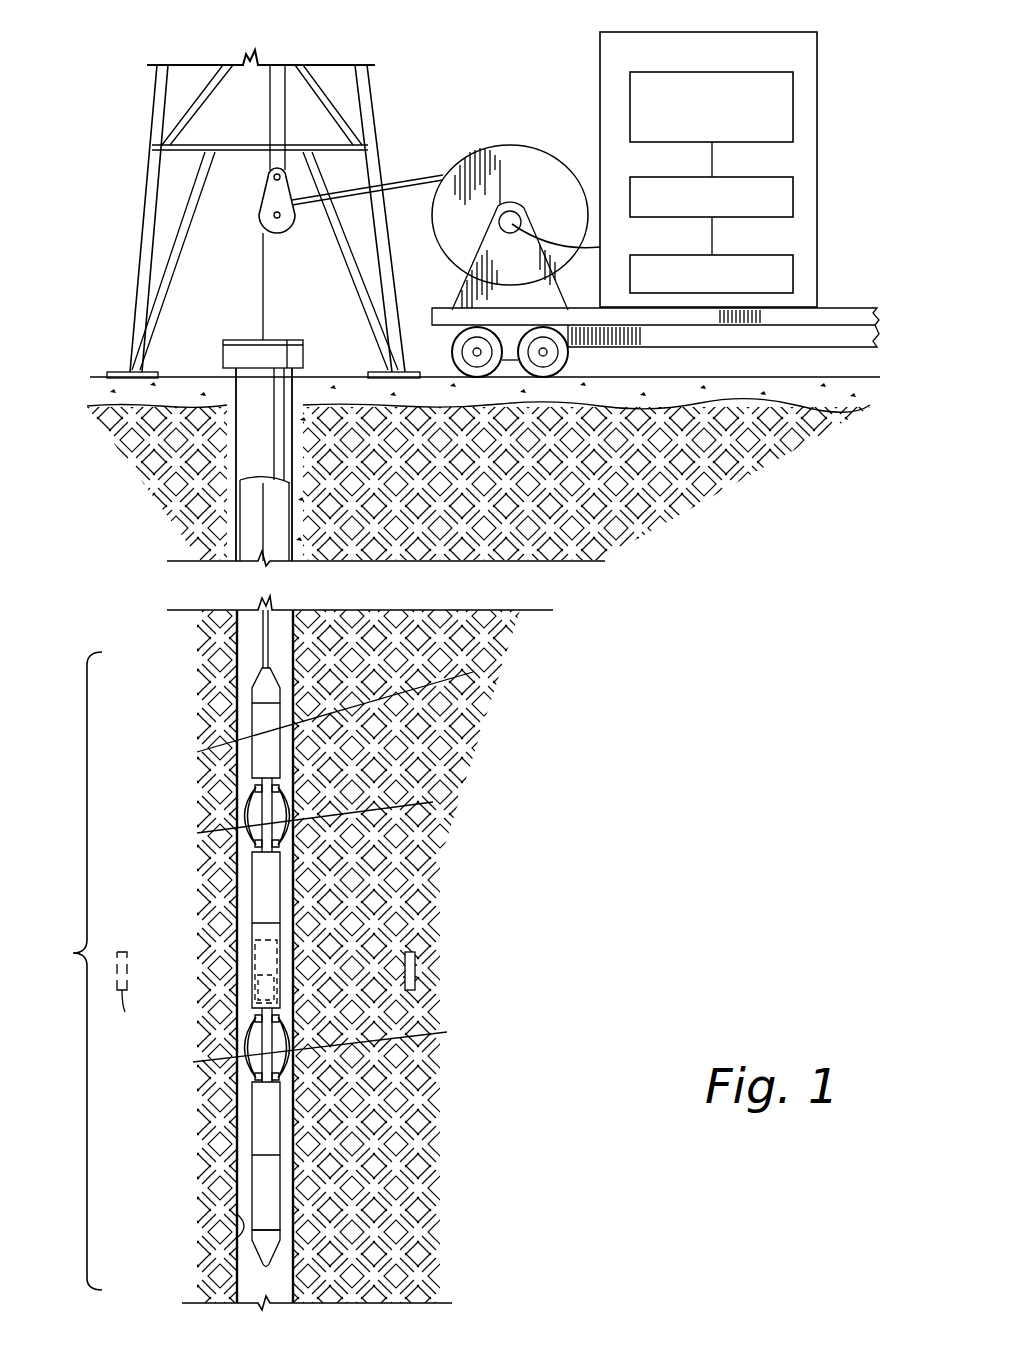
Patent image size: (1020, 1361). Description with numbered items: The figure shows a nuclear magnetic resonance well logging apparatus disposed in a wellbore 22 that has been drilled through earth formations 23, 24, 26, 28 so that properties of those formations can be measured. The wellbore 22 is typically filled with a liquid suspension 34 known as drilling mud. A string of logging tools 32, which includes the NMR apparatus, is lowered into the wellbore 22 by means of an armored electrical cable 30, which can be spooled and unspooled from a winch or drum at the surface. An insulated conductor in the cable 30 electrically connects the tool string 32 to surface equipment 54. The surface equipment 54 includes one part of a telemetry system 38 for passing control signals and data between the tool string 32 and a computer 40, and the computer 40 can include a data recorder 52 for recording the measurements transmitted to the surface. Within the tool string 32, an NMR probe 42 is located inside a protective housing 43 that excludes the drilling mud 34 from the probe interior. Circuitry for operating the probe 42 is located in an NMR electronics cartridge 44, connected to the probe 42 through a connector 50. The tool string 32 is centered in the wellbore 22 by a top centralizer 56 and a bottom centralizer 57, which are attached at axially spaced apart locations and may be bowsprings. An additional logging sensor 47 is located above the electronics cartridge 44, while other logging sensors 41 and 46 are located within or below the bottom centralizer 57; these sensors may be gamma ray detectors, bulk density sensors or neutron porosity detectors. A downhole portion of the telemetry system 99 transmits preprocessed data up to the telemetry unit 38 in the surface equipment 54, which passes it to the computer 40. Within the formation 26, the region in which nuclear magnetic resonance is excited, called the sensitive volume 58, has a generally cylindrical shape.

The wellbore 22 is at (240, 1237).
The earth formation 23 is at (470, 647).
The earth formation 24 is at (435, 750).
The earth formation 26 is at (412, 900).
The earth formation 28 is at (410, 1098).
The armored electrical cable 30 is at (248, 657).
The string of logging tools 32 is at (69, 971).
The liquid suspension 34 is at (250, 641).
The telemetry system 38 is at (732, 255).
The computer 40 is at (732, 177).
The logging sensor 41 is at (252, 1118).
The NMR probe 42 is at (258, 990).
The protective housing 43 is at (255, 958).
The NMR electronics cartridge 44 is at (255, 886).
The logging sensor 46 is at (253, 1197).
The logging sensor 47 is at (257, 720).
The connector 50 is at (255, 930).
The data recorder 52 is at (737, 72).
The surface equipment 54 is at (748, 32).
The top centralizer 56 is at (262, 802).
The bottom centralizer 57 is at (255, 1047).
The sensitive volume 58 is at (417, 968).
The downhole portion of the telemetry system 99 is at (258, 684).